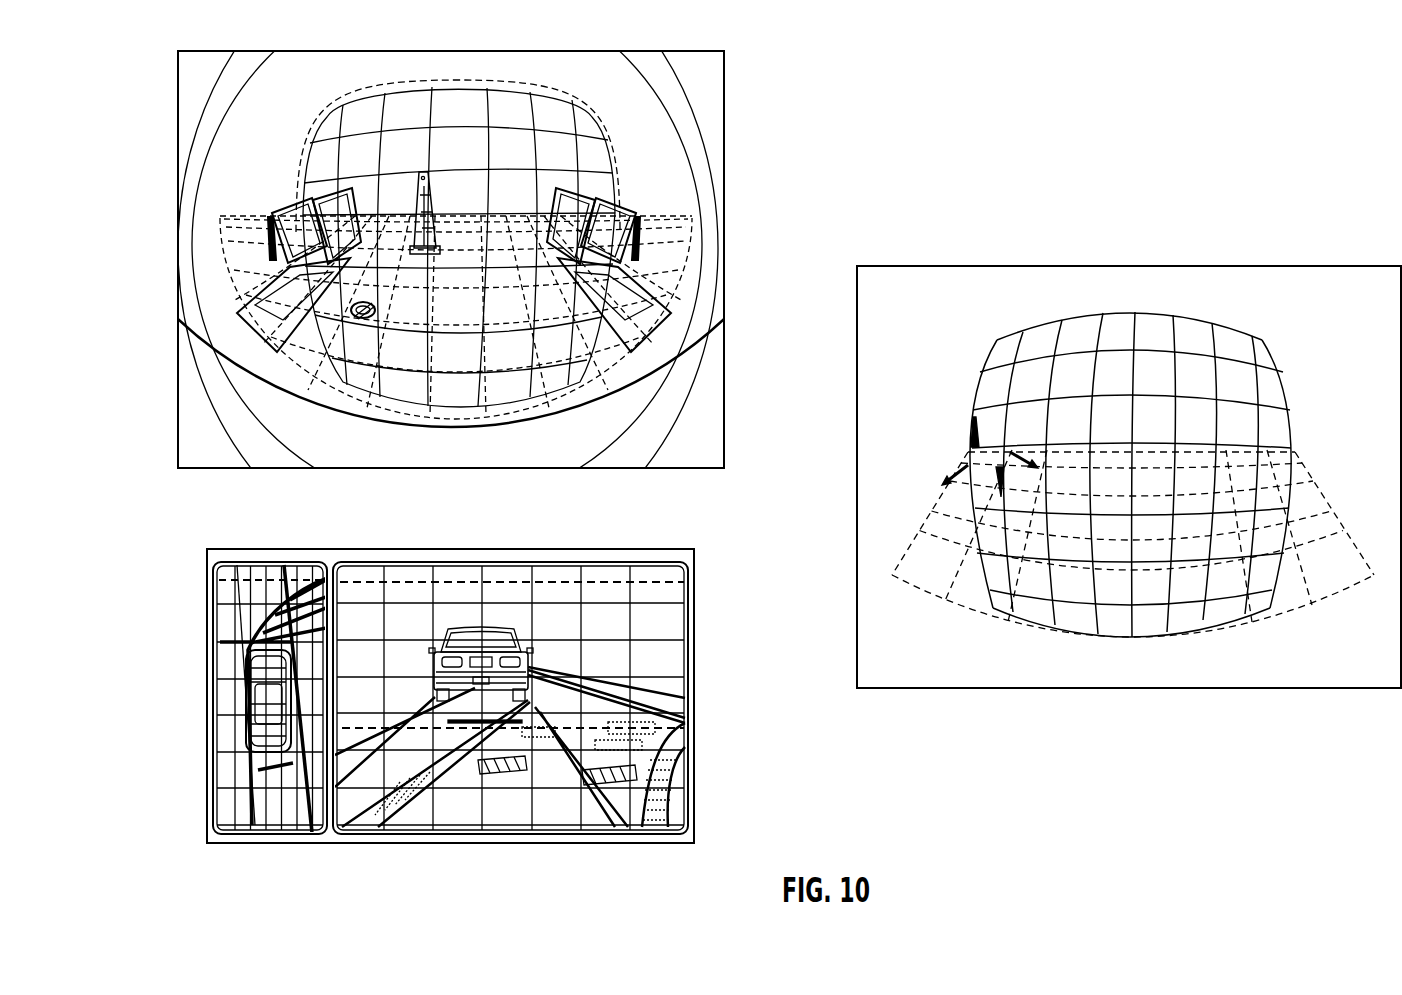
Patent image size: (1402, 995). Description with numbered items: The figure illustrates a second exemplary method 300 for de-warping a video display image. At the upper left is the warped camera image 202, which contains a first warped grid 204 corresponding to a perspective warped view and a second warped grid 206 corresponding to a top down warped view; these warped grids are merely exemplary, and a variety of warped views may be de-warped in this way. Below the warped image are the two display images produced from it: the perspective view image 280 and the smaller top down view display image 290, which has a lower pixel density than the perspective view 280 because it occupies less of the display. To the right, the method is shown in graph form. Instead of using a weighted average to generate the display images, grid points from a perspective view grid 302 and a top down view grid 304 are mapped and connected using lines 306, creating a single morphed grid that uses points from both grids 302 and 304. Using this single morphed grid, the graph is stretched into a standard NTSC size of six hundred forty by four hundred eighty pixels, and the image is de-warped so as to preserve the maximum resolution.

The image 202 is at (213, 51).
The first warped grid 204 is at (360, 106).
The second warped grid 206 is at (254, 259).
The perspective view image 280 is at (512, 562).
The top down view display image 290 is at (254, 562).
The second exemplary method 300 is at (850, 90).
The perspective view grid 302 is at (1149, 313).
The top down view grid 304 is at (918, 518).
The lines 306 is at (977, 443).